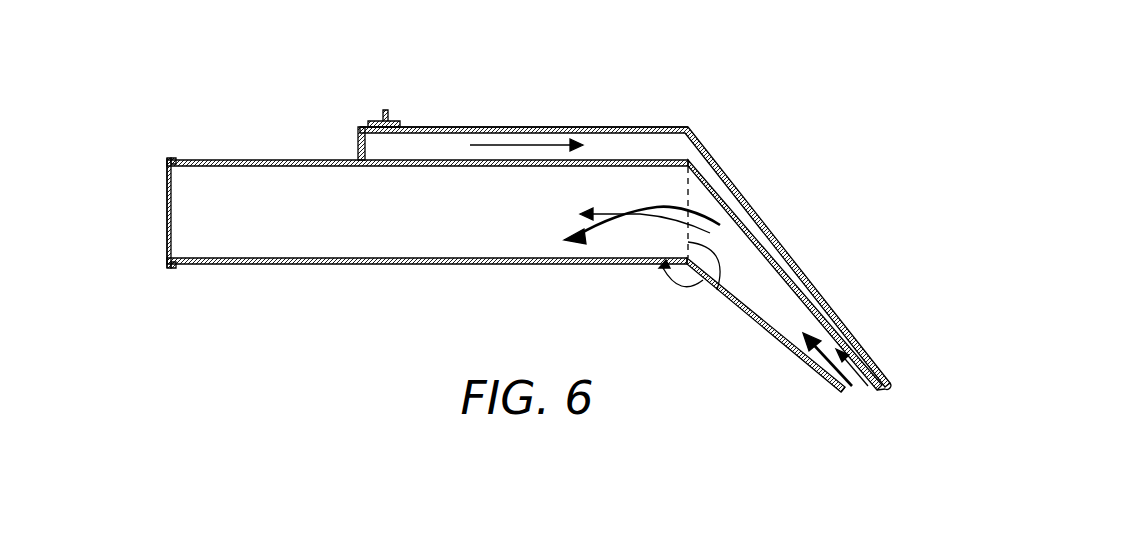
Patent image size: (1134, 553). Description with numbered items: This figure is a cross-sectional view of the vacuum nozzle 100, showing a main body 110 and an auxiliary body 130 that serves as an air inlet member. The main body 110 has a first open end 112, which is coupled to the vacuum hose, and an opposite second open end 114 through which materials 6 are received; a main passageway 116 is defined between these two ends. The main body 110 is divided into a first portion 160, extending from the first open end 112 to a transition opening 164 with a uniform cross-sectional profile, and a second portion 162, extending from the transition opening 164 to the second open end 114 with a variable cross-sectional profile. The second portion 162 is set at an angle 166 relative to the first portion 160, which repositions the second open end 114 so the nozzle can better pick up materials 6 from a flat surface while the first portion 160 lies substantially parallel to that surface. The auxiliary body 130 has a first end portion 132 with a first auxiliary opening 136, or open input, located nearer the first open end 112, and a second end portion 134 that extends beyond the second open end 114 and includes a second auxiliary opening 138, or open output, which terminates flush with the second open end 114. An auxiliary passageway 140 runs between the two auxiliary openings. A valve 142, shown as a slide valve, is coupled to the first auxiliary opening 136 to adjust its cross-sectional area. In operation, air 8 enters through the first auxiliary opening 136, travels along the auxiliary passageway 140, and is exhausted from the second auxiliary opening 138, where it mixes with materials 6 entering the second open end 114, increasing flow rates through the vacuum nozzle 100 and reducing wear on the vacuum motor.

The vacuum nozzle 100 is at (845, 83).
The main body 110 is at (248, 266).
The first open end 112 is at (167, 208).
The second open end 114 is at (857, 396).
The main passageway 116 is at (385, 218).
The auxiliary body 130 is at (691, 127).
The first end portion 132 is at (358, 128).
The second end portion 134 is at (884, 377).
The first auxiliary opening 136 is at (409, 127).
The second auxiliary opening 138 is at (866, 393).
The auxiliary passageway 140 is at (626, 146).
The valve 142 is at (375, 121).
The first portion 160 is at (338, 266).
The second portion 162 is at (761, 324).
The transition opening 164 is at (717, 290).
The angle 166 is at (683, 292).
The air 8 is at (547, 145).
The materials 6 is at (610, 229).